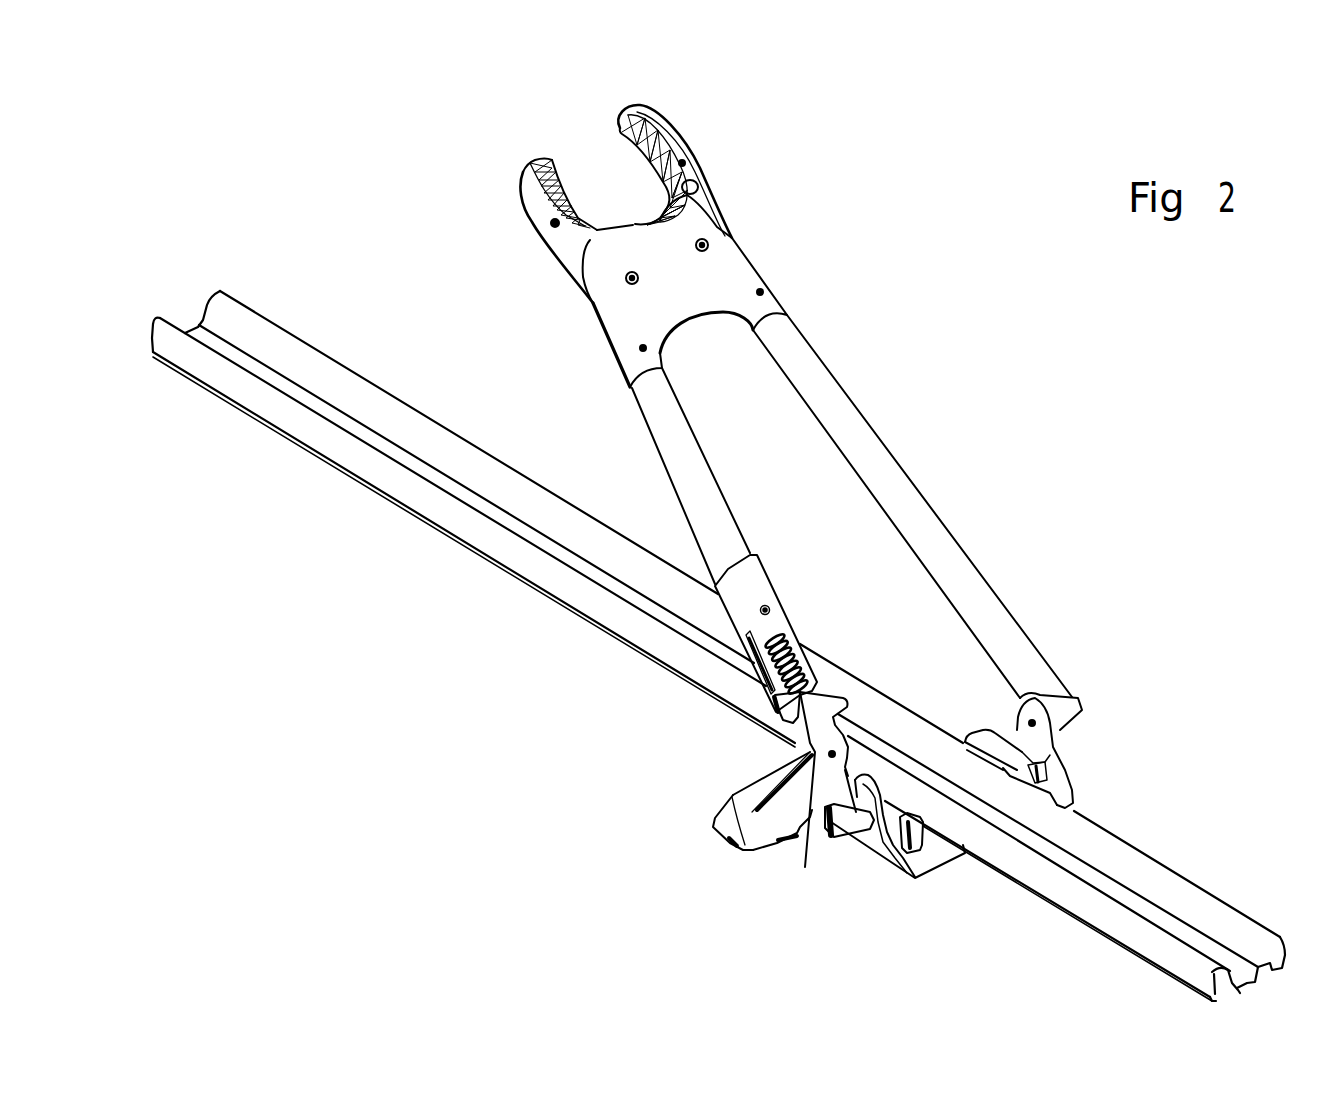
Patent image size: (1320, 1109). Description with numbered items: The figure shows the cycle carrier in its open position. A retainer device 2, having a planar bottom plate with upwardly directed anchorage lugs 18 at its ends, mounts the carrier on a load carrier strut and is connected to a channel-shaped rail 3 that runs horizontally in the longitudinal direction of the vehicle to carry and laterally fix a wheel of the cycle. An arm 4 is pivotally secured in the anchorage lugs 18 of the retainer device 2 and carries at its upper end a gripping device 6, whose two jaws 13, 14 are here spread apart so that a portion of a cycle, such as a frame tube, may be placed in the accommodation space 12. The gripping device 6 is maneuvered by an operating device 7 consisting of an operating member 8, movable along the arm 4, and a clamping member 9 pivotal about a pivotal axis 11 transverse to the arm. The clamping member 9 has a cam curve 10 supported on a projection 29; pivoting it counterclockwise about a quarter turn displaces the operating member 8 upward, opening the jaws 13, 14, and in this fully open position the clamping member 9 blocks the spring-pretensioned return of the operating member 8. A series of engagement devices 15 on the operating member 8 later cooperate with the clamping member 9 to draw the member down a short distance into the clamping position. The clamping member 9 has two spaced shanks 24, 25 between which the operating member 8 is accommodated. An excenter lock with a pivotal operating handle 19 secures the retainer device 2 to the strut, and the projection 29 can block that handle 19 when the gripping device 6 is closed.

The retainer device 2 is at (930, 857).
The rail 3 is at (358, 458).
The arm 4 is at (685, 443).
The gripping device 6 is at (849, 200).
The operating device 7 is at (558, 821).
The operating member 8 is at (753, 577).
The clamping member 9 is at (777, 825).
The cam curve 10 is at (798, 722).
The pivotal axis 11 is at (820, 800).
The accommodation space 12 is at (587, 172).
The jaw 13 is at (557, 242).
The jaw 14 is at (683, 172).
The engagement devices 15 is at (788, 645).
The anchorage lugs 18 is at (882, 833).
The operating handle 19 is at (982, 742).
The shank 24 is at (733, 793).
The shank 25 is at (723, 828).
The projection 29 is at (833, 707).